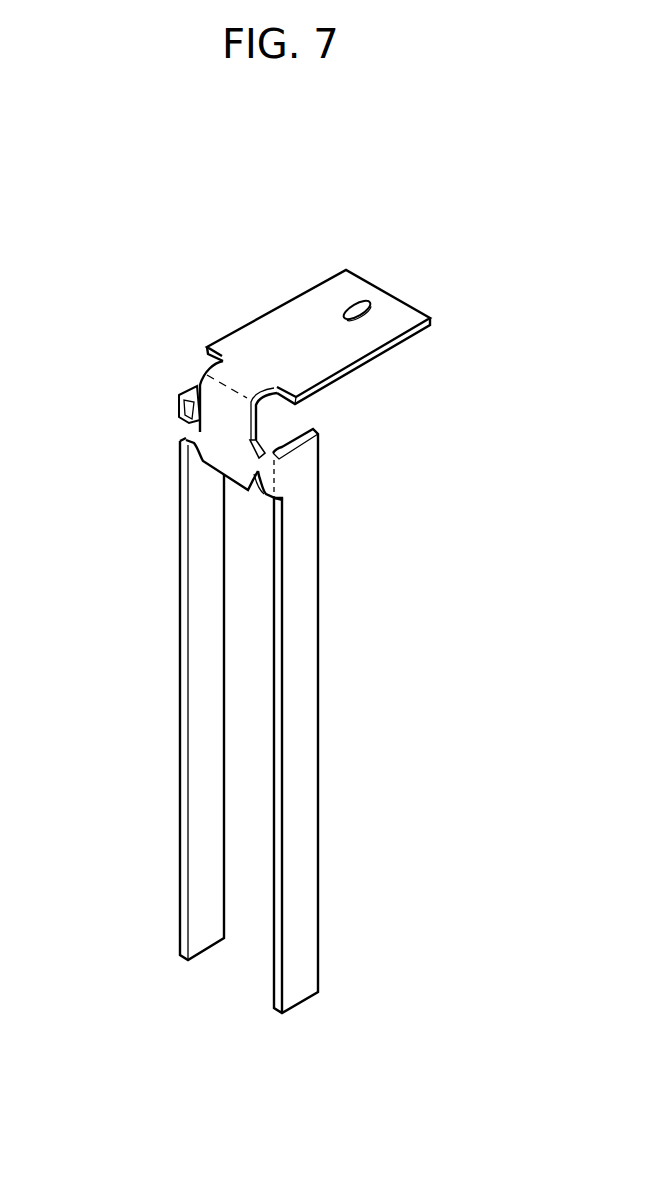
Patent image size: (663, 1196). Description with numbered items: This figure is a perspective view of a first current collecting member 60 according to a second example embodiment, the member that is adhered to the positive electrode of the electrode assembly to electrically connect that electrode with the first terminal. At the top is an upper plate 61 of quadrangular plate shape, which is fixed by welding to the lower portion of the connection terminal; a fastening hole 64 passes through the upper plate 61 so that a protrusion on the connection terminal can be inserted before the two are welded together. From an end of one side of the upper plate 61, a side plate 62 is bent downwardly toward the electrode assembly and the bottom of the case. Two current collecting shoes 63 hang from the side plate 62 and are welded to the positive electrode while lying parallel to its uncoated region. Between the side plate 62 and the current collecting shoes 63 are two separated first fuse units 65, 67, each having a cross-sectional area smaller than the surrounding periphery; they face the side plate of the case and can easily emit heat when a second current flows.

The first current collecting member 60 is at (309, 252).
The upper plate 61 is at (405, 317).
The side plate 62 is at (226, 449).
The current collecting shoes 63 is at (297, 740).
The fastening hole 64 is at (358, 303).
The first fuse unit 65 is at (188, 430).
The first fuse unit 67 is at (260, 483).